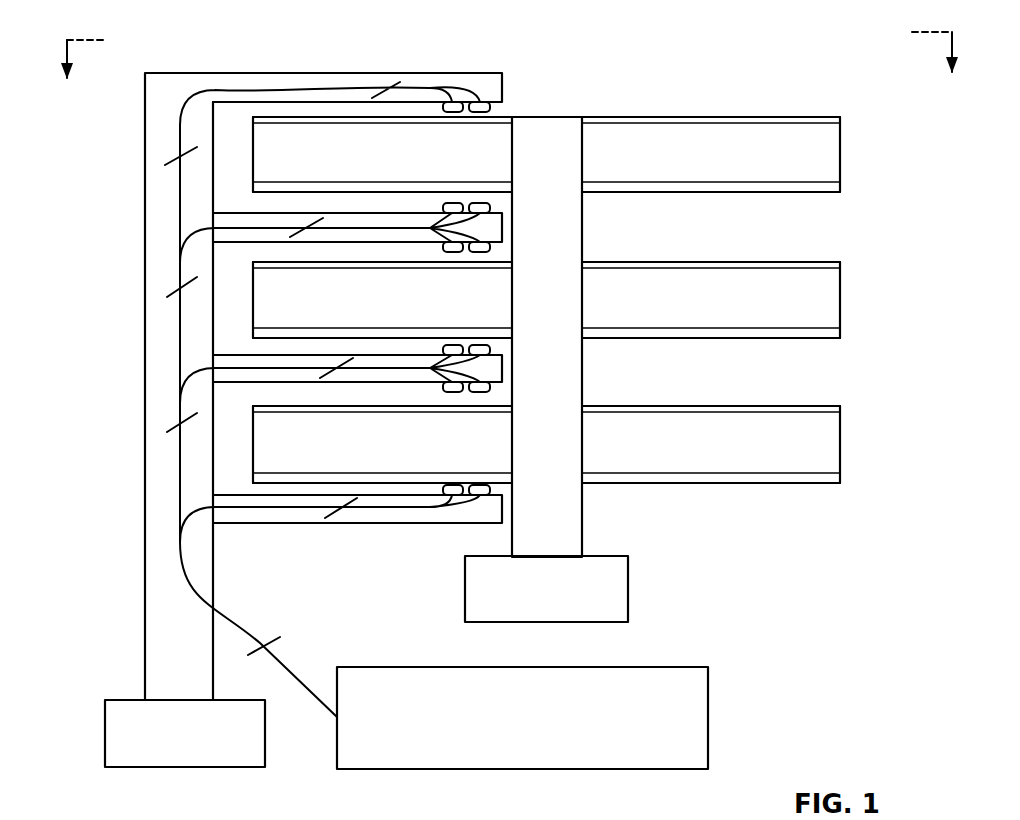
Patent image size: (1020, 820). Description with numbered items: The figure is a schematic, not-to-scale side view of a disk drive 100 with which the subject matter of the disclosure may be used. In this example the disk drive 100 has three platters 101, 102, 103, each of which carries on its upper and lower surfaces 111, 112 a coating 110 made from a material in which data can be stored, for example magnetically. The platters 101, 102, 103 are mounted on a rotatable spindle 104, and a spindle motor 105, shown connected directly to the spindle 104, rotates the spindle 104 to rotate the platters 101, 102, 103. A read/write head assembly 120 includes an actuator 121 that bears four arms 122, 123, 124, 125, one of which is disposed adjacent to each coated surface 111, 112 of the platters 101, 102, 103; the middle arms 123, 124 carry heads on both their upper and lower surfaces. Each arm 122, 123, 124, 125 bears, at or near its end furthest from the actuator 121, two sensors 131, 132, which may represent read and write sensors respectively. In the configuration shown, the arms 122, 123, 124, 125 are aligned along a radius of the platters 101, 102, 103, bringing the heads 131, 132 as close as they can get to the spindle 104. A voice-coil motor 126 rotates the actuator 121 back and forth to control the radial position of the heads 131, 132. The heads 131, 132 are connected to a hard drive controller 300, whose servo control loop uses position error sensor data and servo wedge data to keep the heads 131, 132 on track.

The disk drive 100 is at (190, 50).
The platter 101 is at (840, 155).
The platter 102 is at (840, 300).
The platter 103 is at (840, 445).
The spindle 104 is at (553, 125).
The spindle motor 105 is at (628, 590).
The coating 110 is at (840, 120).
The upper surface 111 is at (660, 117).
The lower surface 112 is at (660, 192).
The read/write head assembly 120 is at (133, 206).
The actuator 121 is at (143, 308).
The arm 122 is at (322, 73).
The arm 123 is at (340, 213).
The arm 124 is at (336, 355).
The arm 125 is at (338, 495).
The voice-coil motor 126 is at (145, 700).
The read sensor 131 is at (480, 112).
The write sensor 132 is at (452, 112).
The hard drive controller 300 is at (407, 667).